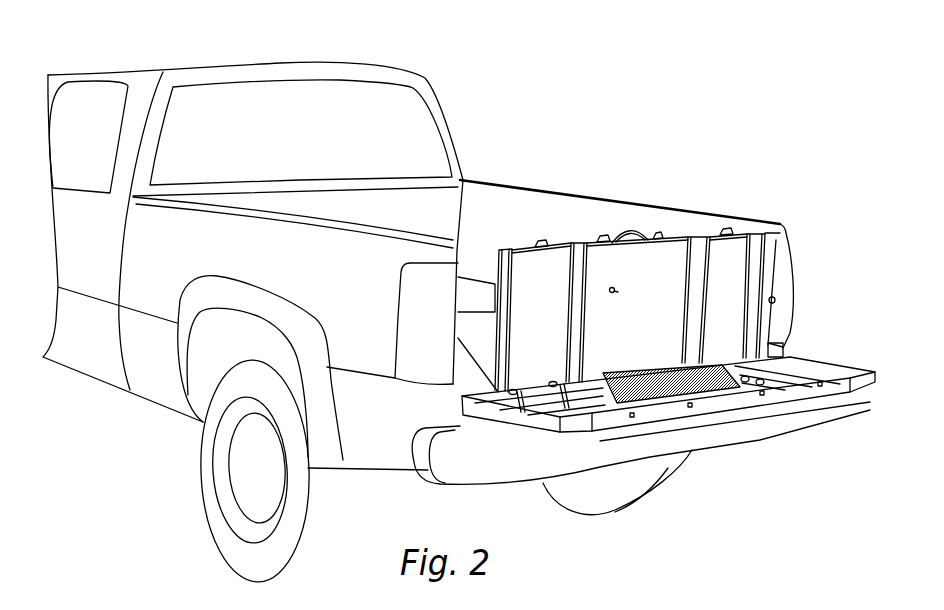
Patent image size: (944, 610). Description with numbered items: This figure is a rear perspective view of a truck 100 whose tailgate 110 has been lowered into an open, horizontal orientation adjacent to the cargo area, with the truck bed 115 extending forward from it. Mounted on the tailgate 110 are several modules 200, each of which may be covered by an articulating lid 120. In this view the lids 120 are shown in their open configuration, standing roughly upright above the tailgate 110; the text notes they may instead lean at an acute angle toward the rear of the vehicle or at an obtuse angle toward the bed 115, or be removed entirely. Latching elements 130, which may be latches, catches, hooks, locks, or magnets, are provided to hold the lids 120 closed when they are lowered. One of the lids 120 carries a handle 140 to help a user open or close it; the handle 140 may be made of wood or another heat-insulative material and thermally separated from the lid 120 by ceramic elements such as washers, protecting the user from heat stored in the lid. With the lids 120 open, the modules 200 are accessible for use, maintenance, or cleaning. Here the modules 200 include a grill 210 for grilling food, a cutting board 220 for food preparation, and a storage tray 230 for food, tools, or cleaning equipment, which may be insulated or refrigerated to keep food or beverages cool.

The truck 100 is at (493, 72).
The tailgate 110 is at (807, 389).
The bed 115 is at (476, 296).
The articulating lid 120 is at (503, 247).
The latching element 130 is at (541, 240).
The handle 140 is at (614, 227).
The module 200 is at (810, 360).
The grill 210 is at (663, 368).
The cutting board 220 is at (546, 382).
The storage tray 230 is at (798, 362).